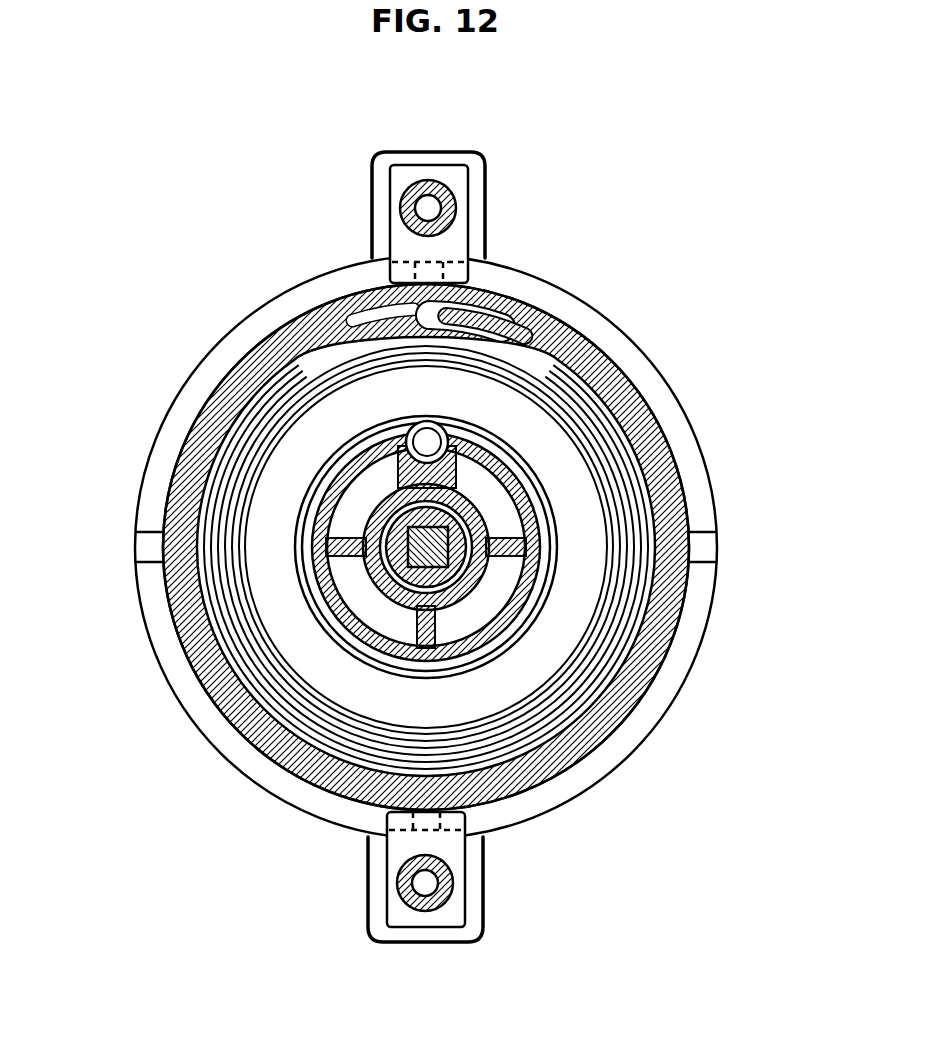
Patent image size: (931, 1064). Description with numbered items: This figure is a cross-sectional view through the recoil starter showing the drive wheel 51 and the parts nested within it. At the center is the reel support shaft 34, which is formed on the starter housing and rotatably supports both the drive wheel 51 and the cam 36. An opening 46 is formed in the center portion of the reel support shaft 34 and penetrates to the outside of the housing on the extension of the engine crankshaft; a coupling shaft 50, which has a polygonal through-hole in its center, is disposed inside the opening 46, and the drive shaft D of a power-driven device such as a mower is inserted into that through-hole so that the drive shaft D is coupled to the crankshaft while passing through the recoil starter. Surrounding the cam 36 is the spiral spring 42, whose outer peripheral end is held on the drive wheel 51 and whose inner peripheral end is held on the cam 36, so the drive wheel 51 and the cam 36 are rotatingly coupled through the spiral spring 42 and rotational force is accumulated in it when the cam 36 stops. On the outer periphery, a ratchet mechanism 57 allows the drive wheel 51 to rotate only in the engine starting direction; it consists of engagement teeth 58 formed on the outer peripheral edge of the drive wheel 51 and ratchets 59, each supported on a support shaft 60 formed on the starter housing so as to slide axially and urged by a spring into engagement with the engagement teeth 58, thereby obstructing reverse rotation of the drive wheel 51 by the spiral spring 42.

The reel support shaft 34 is at (377, 577).
The cam 36 is at (305, 503).
The spiral spring 42 is at (600, 374).
The opening 46 is at (477, 587).
The coupling shaft 50 is at (457, 647).
The drive wheel 51 is at (212, 395).
The ratchet mechanism 57 is at (498, 170).
The engagement teeth 58 is at (470, 283).
The ratchets 59 is at (485, 224).
The support shaft 60 is at (400, 221).
The drive shaft D is at (482, 482).